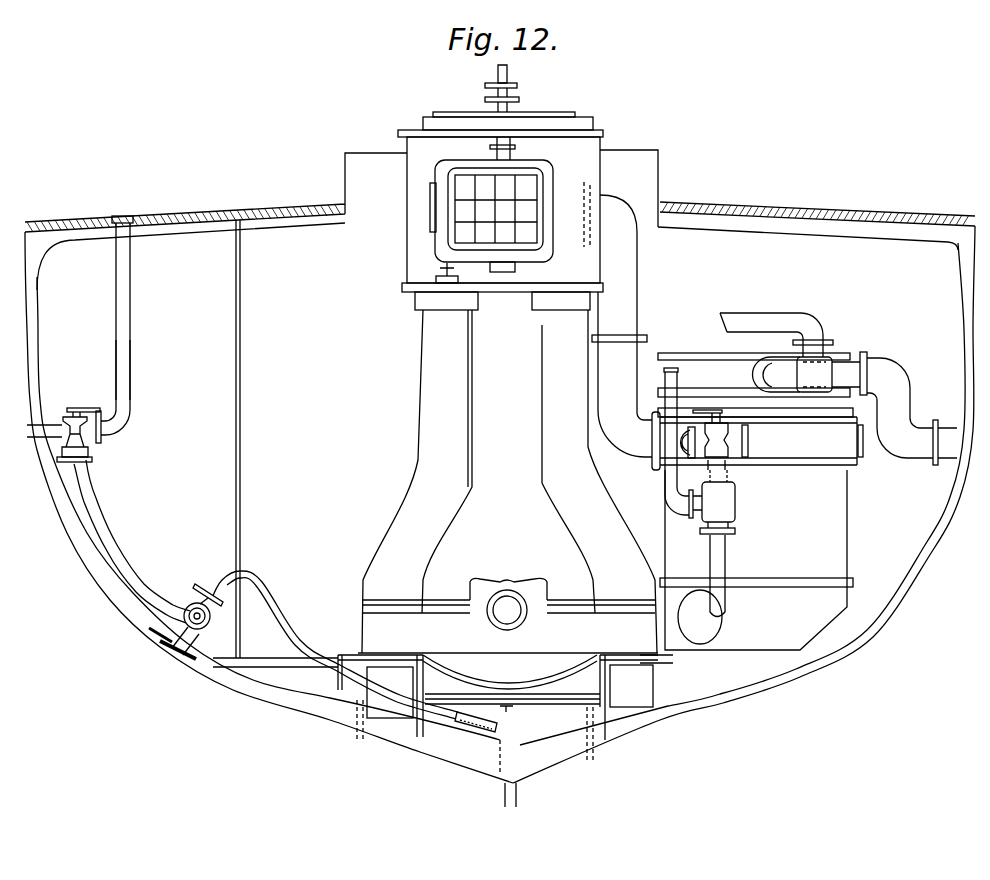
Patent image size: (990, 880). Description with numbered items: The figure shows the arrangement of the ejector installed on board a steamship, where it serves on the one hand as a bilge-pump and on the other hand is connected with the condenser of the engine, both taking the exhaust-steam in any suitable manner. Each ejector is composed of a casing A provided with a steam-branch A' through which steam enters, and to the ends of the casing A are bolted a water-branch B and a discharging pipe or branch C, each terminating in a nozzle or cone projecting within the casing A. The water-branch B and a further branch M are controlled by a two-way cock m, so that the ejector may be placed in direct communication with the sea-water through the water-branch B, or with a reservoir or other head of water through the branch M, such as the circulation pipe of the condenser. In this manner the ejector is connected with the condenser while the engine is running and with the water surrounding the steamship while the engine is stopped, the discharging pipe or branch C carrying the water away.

The casing A is at (462, 499).
The water-branch B is at (538, 542).
The discharging pipe or branch C is at (492, 419).
The branch M is at (412, 397).
The two-way cock m is at (397, 424).
The steam-branch A' is at (750, 423).
The discharge pipe C' is at (727, 576).